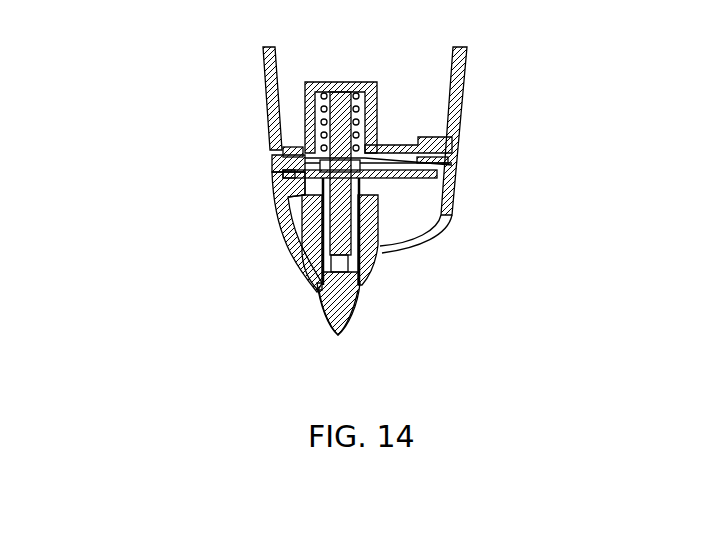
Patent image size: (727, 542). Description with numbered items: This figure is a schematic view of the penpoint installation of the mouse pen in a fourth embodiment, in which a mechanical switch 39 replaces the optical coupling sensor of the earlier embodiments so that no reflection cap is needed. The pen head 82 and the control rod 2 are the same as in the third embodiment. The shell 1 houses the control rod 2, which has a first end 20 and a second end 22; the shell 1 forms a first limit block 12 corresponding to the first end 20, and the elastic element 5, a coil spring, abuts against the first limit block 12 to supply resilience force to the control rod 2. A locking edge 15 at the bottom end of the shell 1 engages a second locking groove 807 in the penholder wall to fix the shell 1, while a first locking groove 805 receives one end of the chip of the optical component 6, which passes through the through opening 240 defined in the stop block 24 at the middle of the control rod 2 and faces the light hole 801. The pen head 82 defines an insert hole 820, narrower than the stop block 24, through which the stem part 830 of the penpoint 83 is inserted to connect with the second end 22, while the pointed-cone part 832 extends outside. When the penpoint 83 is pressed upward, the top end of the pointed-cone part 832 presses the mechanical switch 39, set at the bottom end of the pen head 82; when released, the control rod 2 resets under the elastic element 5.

The shell 1 is at (378, 110).
The control rod 2 is at (480, 200).
The elastic element 5 is at (325, 120).
The optical component 6 is at (377, 180).
The first limit block 12 is at (338, 84).
The locking edge 15 is at (322, 154).
The first end 20 is at (380, 125).
The second end 22 is at (380, 218).
The stop block 24 is at (437, 172).
The mechanical switch 39 is at (360, 285).
The pen head 82 is at (373, 272).
The penpoint 83 is at (211, 286).
The through opening 240 is at (292, 193).
The light hole 801 is at (427, 237).
The first locking groove 805 is at (283, 176).
The second locking groove 807 is at (290, 150).
The insert hole 820 is at (362, 282).
The stem part 830 is at (312, 278).
The pointed-cone part 832 is at (327, 325).